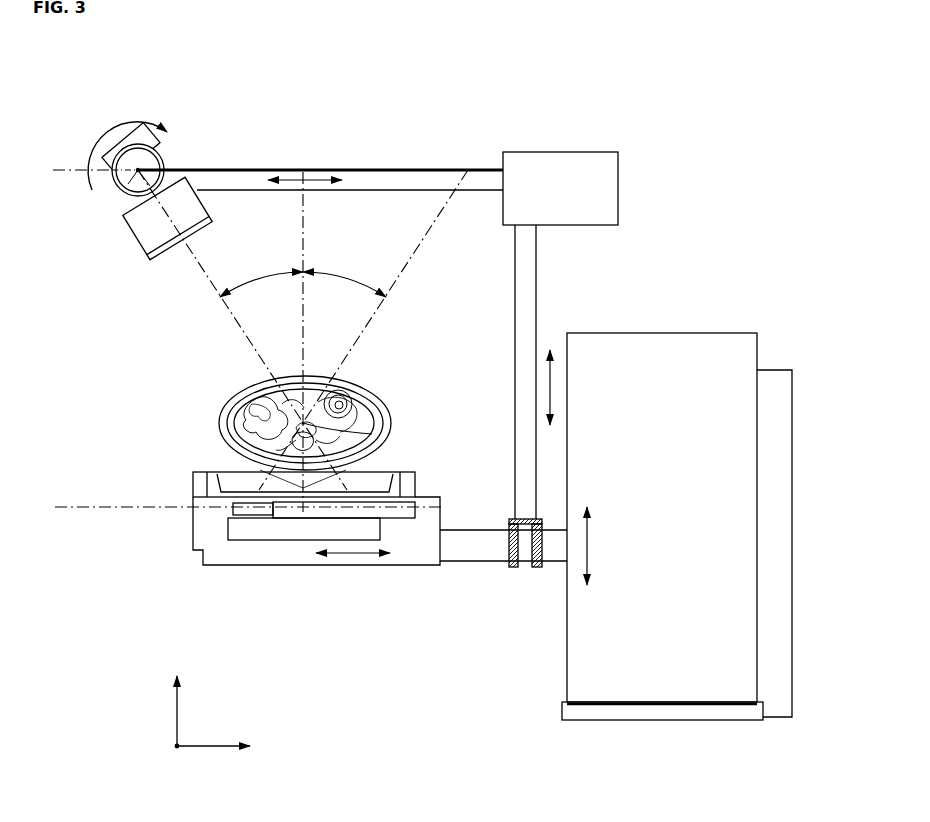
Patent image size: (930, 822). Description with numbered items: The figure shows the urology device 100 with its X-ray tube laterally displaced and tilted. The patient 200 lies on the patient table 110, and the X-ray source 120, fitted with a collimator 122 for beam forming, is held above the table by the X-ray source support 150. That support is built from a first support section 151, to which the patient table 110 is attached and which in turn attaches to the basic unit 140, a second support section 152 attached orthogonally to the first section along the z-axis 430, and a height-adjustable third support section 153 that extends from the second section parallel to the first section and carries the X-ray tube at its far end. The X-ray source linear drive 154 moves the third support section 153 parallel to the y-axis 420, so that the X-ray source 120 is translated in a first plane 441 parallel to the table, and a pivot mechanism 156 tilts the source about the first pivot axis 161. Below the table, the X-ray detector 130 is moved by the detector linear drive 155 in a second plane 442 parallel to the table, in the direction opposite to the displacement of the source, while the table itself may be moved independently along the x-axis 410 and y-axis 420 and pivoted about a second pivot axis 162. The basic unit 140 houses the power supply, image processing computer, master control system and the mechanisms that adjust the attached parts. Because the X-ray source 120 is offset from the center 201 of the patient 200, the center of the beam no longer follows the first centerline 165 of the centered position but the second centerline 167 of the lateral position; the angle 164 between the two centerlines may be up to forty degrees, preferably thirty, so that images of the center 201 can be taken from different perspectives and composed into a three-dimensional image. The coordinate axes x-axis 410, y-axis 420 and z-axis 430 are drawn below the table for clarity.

The urology device 100 is at (764, 310).
The patient table 110 is at (188, 463).
The X-ray source 120 is at (122, 188).
The collimator 122 is at (143, 228).
The X-ray detector 130 is at (287, 514).
The basic unit 140 is at (677, 348).
The X-ray source support 150 is at (604, 132).
The first support section 151 is at (493, 548).
The second support section 152 is at (527, 277).
The third support section 153 is at (423, 167).
The X-ray source linear drive 154 is at (563, 175).
The detector linear drive 155 is at (347, 526).
The pivot mechanism 156 is at (142, 140).
The first pivot axis 161 is at (148, 158).
The second pivot axis 162 is at (470, 574).
The angle 164 is at (258, 279).
The first centerline 165 is at (305, 214).
The second centerline 167 is at (213, 284).
The patient 200 is at (382, 388).
The center of the patient 201 is at (358, 432).
The x-axis 410 is at (177, 750).
The y-axis 420 is at (225, 750).
The z-axis 430 is at (180, 702).
The first plane 441 is at (73, 166).
The second plane 442 is at (77, 512).